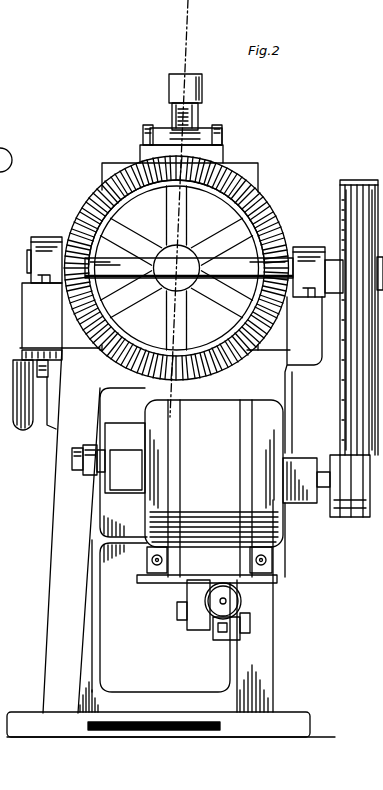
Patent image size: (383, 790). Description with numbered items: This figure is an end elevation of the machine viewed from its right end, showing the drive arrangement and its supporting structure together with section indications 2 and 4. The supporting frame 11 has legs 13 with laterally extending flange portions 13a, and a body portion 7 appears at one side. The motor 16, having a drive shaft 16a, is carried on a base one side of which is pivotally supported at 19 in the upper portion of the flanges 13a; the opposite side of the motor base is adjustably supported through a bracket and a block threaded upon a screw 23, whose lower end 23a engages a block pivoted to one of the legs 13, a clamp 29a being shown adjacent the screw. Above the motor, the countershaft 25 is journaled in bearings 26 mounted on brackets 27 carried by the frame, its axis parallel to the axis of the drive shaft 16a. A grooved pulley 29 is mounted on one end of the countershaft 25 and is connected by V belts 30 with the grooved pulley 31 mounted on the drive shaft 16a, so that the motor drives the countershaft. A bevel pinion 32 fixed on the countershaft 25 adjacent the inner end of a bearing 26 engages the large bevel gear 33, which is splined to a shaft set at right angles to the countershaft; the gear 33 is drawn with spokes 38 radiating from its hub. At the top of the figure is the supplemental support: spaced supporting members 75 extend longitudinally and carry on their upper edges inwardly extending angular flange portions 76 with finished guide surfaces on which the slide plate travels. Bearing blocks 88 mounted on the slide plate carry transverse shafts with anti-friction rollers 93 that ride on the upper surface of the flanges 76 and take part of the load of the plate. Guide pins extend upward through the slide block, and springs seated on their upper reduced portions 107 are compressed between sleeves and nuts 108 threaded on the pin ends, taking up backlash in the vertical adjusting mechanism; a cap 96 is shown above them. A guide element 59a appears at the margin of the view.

The section line 2- 2 is at (200, 16).
The section line 4- 4 is at (177, 420).
The knob 96 is at (202, 80).
The upper reduced portion 107 is at (173, 105).
The nut 108 is at (176, 115).
The bearing block 88 is at (206, 128).
The anti-friction roller 93 is at (143, 130).
The angular flange portion 76 is at (223, 148).
The supporting member 75 is at (223, 160).
The countershaft 25 is at (100, 200).
The spokes 38 is at (258, 183).
The bevel gear 33 is at (268, 206).
The bevel pinion 32 is at (68, 238).
The bearing 26 is at (31, 239).
The body 7 is at (28, 323).
The supporting frame 11 is at (53, 428).
The guide 59a is at (12, 155).
The bracket 27 is at (322, 325).
The grooved pulley 29 is at (345, 180).
The V belt 30 is at (350, 380).
The grooved pulley 31 is at (348, 518).
The motor 16 is at (194, 491).
The pivot 19 is at (98, 470).
The drive shaft 16a is at (323, 495).
The leg 13 is at (52, 585).
The flange portion 13a is at (87, 662).
The screw 23 is at (216, 600).
The lower end 23a is at (213, 632).
The clamp 29a is at (251, 625).